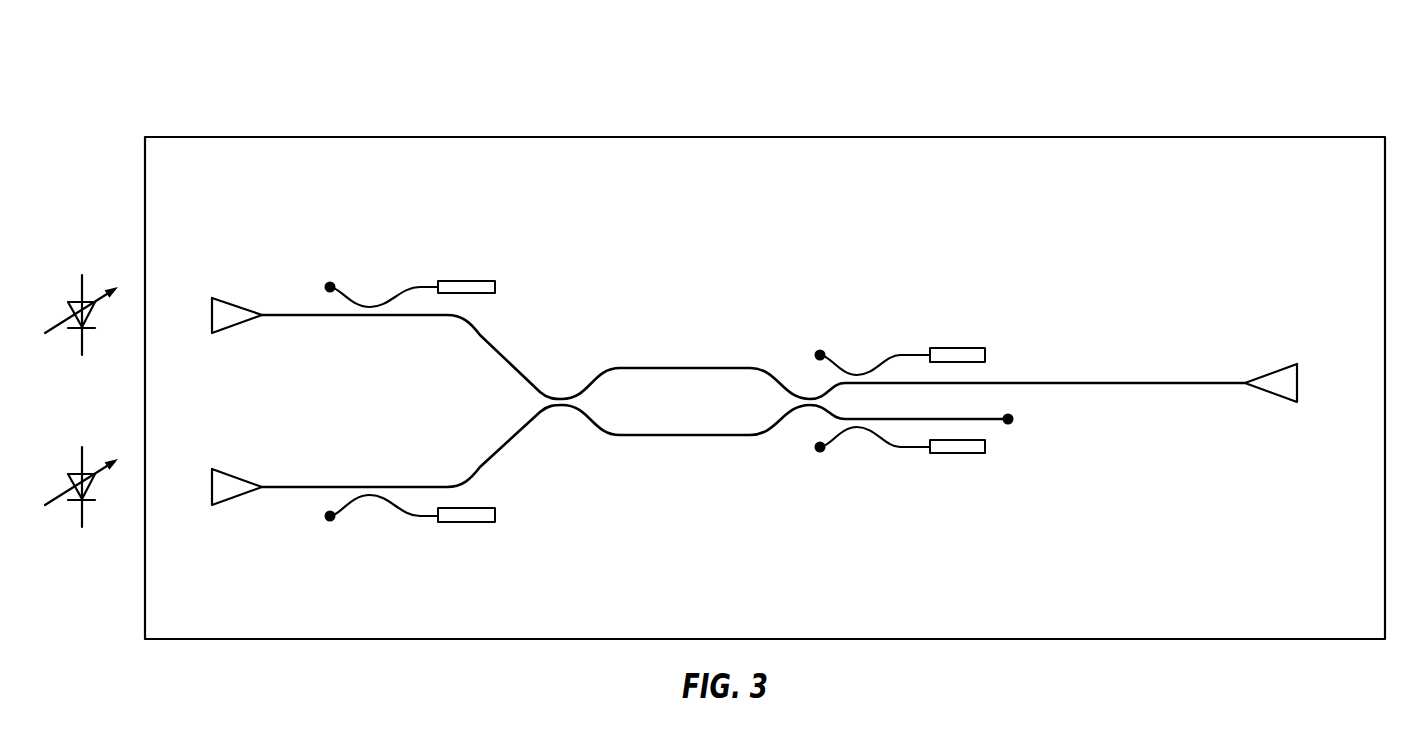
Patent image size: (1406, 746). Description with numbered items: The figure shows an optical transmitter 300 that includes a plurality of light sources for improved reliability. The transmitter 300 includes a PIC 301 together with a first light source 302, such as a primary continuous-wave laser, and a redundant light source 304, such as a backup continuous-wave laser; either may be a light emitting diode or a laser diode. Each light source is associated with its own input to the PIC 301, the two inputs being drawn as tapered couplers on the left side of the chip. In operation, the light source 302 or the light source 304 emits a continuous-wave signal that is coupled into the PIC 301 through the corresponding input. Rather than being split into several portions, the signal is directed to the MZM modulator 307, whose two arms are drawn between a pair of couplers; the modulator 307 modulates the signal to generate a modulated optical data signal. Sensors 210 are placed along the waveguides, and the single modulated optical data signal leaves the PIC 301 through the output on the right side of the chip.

The optical transmitter 300 is at (1325, 68).
The PIC 301 is at (1338, 137).
The light source 302 is at (73, 258).
The redundant light source 304 is at (73, 430).
The modulator 307 is at (690, 367).
The sensor 210 is at (467, 281).